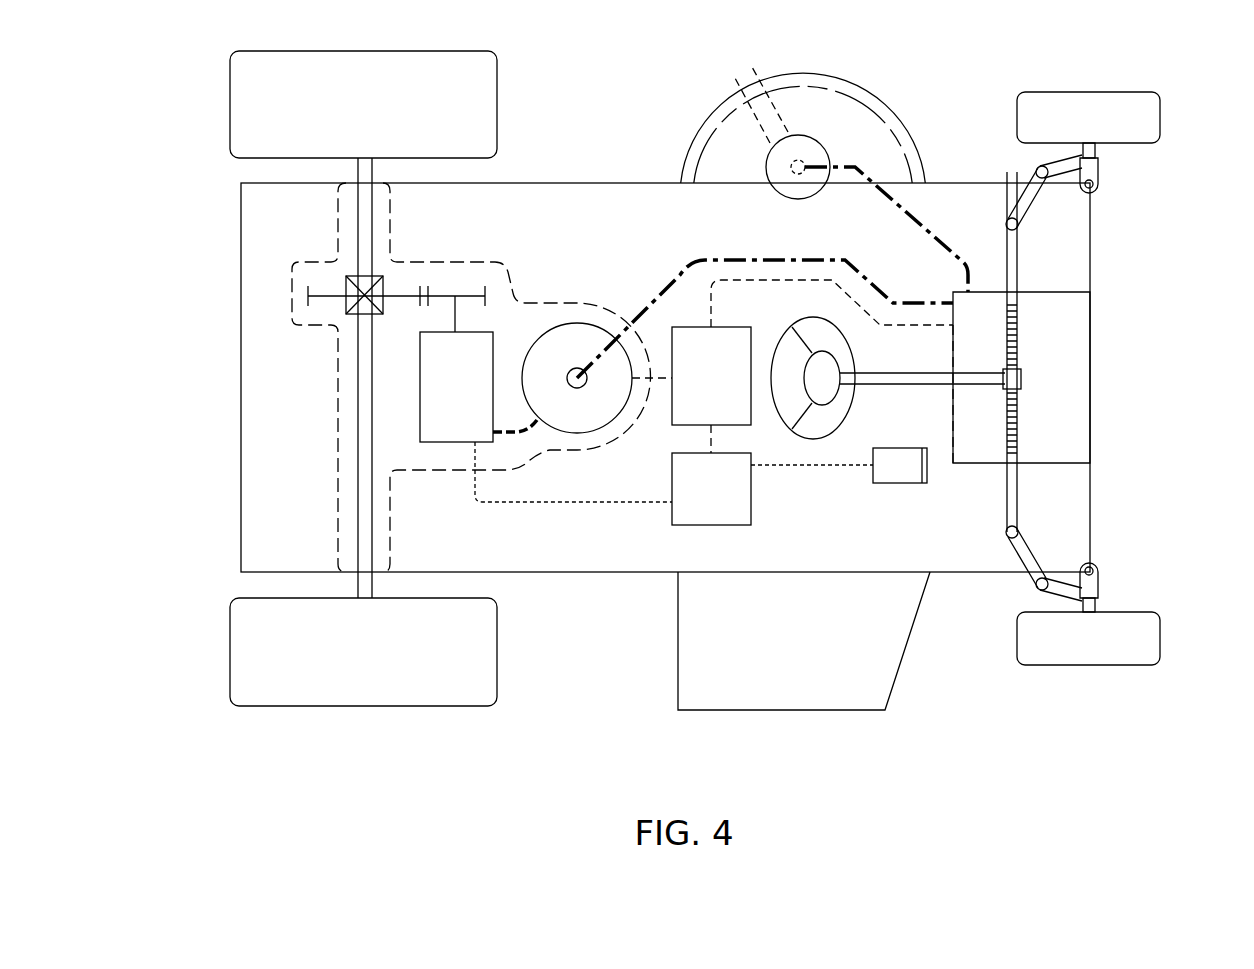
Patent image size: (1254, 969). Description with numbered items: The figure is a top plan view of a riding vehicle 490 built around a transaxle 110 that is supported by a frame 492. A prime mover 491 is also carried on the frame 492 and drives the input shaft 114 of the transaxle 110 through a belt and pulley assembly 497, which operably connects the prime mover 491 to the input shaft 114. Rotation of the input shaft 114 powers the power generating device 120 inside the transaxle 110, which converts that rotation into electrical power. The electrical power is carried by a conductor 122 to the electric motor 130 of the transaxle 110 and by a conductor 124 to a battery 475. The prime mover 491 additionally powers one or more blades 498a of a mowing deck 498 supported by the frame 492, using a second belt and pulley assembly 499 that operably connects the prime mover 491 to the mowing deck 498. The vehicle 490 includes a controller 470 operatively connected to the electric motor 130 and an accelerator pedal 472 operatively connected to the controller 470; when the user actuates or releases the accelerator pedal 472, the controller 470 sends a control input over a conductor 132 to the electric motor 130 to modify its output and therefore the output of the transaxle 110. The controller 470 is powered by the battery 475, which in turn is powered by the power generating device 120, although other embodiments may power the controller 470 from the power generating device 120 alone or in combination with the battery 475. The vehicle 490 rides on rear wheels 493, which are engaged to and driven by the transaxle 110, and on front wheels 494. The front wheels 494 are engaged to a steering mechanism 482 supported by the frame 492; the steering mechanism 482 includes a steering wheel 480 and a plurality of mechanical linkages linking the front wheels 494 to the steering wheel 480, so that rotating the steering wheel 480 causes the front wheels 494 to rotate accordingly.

The riding vehicle 490 is at (172, 88).
The frame 492 is at (597, 183).
The rear wheels 493 is at (363, 51).
The front wheels 494 is at (1160, 118).
The transaxle 110 is at (576, 276).
The power generating device 120 is at (558, 417).
The input shaft 114 is at (577, 368).
The electric motor 130 is at (474, 369).
The conductor 122 is at (515, 428).
The conductor 124 is at (663, 380).
The conductor 132 is at (582, 503).
The battery 475 is at (692, 391).
The controller 470 is at (692, 504).
The accelerator pedal 472 is at (898, 483).
The belt and pulley assembly 497 is at (792, 258).
The mowing deck 498 is at (800, 47).
The blade 498a is at (772, 100).
The belt and pulley assembly 499 is at (925, 226).
The steering wheel 480 is at (817, 318).
The steering mechanism 482 is at (1033, 374).
The prime mover 491 is at (1043, 292).